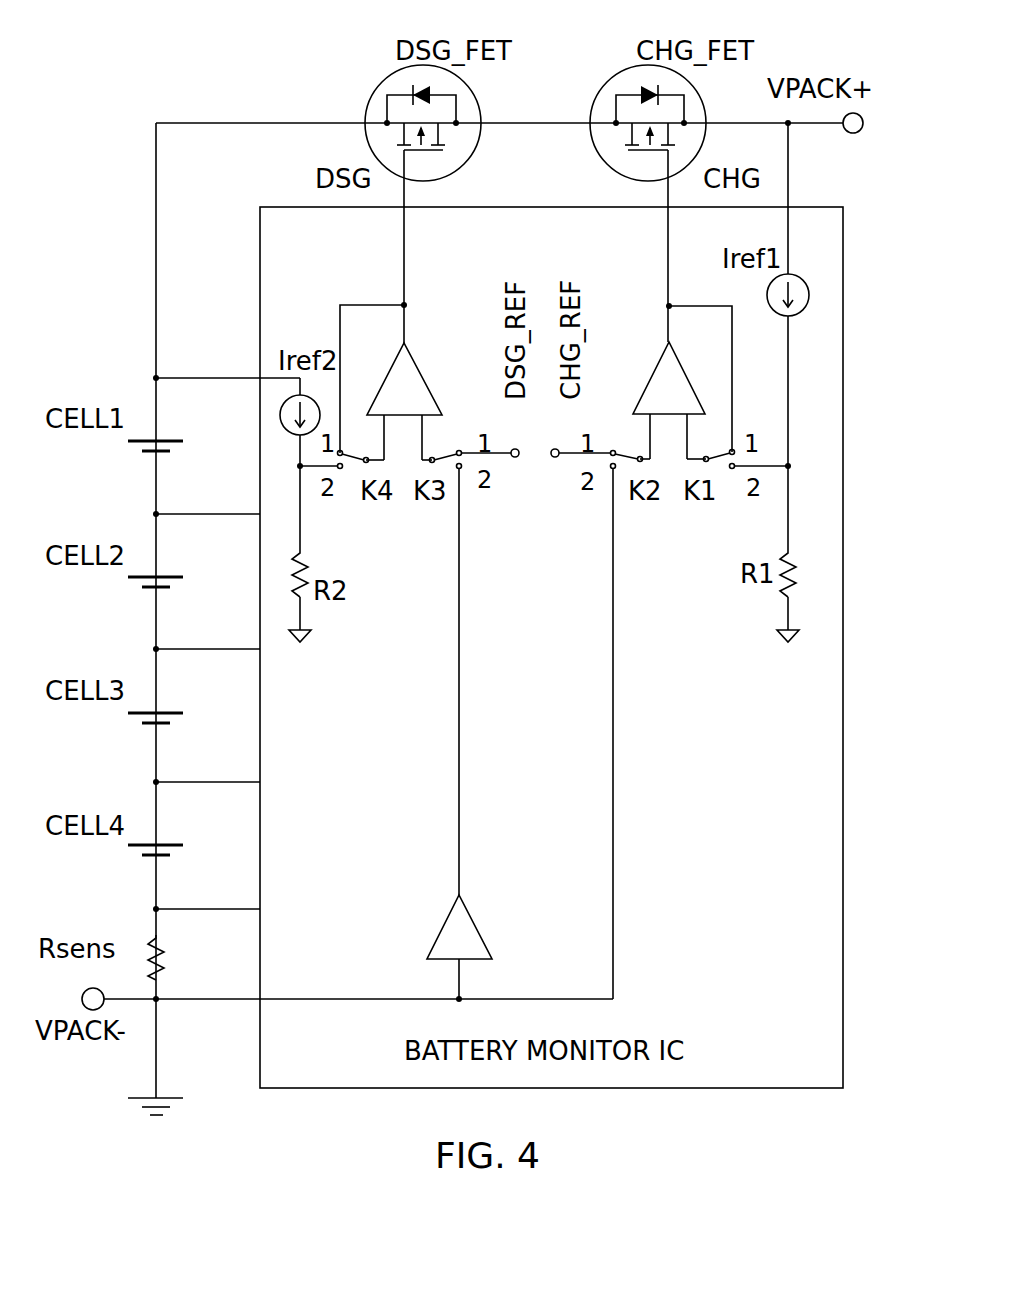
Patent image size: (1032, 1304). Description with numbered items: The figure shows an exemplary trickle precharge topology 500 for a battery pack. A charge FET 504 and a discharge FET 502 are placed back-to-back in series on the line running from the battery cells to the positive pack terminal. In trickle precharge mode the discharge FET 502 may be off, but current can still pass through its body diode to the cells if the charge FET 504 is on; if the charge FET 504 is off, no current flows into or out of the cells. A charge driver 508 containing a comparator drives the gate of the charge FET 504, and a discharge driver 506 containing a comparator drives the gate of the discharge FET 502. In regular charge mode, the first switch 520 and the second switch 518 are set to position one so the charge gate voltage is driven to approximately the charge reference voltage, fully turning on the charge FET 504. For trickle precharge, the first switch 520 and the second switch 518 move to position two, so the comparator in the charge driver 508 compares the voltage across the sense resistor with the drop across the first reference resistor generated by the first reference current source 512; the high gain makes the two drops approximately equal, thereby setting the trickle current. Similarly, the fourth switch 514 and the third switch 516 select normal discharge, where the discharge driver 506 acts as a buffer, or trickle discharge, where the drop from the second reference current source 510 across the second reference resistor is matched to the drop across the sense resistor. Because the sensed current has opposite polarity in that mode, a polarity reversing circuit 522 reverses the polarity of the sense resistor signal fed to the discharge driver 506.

The trickle precharge topology 500 is at (172, 99).
The discharge FET 502 is at (374, 101).
The charge FET 504 is at (612, 101).
The discharge driver 506 is at (428, 390).
The charge driver 508 is at (640, 397).
The reference current source Iref2 510 is at (282, 428).
The reference current source Iref1 512 is at (810, 295).
The switch K4 514 is at (346, 485).
The switch K3 516 is at (470, 492).
The switch K2 518 is at (604, 478).
The switch K1 520 is at (733, 478).
The polarity reversing circuit 522 is at (438, 936).